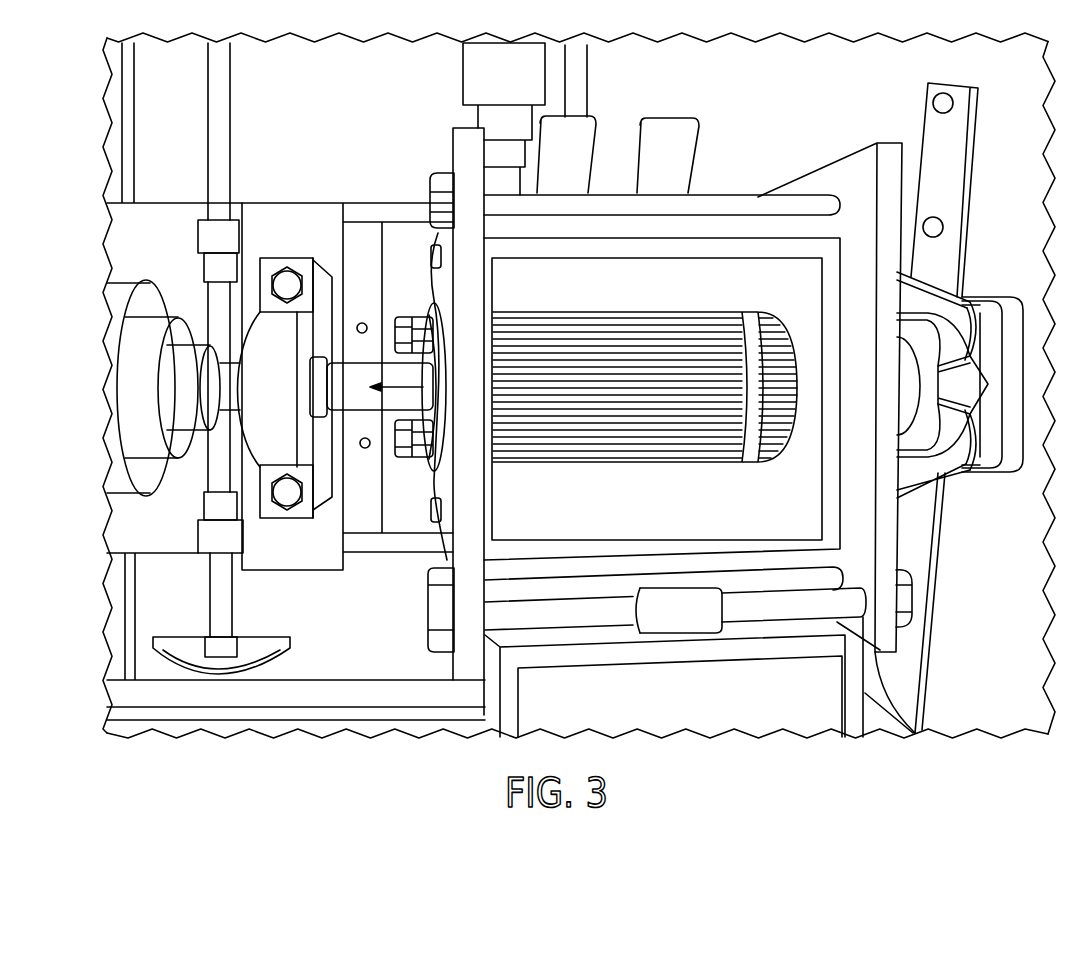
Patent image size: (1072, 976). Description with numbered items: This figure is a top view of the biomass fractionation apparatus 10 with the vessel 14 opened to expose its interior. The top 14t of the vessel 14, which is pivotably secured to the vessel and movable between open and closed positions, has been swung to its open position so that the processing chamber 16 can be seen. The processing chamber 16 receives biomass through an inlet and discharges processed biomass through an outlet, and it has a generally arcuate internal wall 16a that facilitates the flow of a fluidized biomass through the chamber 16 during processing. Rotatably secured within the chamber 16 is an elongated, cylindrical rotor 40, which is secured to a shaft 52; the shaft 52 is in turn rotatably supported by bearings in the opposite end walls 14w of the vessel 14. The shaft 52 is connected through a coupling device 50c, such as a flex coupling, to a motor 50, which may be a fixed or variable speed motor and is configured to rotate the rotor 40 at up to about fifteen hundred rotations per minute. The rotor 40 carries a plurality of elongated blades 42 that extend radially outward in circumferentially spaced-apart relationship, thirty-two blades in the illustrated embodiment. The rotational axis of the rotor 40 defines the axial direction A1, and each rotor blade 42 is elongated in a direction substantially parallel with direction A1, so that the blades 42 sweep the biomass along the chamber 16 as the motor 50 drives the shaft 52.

The biomass fractionation apparatus 10 is at (579, 434).
The vessel 14 is at (713, 250).
The top 14t is at (748, 711).
The end walls 14w is at (493, 497).
The processing chamber 16 is at (600, 520).
The arcuate internal wall 16a is at (740, 560).
The rotor 40 is at (707, 300).
The rotor blades 42 is at (537, 313).
The motor 50 is at (130, 282).
The coupling device 50c is at (267, 265).
The shaft 52 is at (370, 375).
The rotational axis / axial direction A1 is at (395, 387).